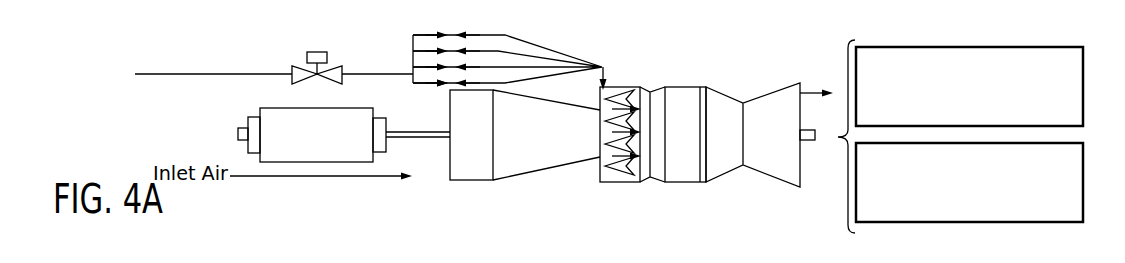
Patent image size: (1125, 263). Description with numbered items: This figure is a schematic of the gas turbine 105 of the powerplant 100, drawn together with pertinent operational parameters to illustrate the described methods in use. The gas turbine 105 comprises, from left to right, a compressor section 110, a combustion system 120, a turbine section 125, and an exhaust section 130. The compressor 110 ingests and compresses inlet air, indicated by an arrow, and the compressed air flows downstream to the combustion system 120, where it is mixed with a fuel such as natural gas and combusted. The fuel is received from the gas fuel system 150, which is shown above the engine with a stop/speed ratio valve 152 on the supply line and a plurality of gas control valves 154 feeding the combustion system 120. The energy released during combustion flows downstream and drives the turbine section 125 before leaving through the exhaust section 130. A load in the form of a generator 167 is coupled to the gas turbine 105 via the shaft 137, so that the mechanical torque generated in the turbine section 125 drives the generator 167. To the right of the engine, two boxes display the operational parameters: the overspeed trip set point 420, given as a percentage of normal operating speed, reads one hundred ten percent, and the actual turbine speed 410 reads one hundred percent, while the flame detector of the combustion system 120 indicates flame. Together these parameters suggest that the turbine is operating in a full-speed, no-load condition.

The powerplant 100 is at (85, 112).
The gas fuel system 150 is at (178, 58).
The stop/speed ratio valve 152 is at (305, 60).
The gas control valves 154 is at (427, 35).
The generator 167 is at (277, 108).
The shaft 137 is at (412, 131).
The compressor section 110 is at (510, 186).
The gas turbine 105 is at (592, 214).
The combustion system 120 is at (645, 194).
The turbine section 125 is at (699, 197).
The exhaust section 130 is at (750, 195).
The overspeed trip set point 420 is at (1009, 46).
The actual turbine speed 410 is at (1004, 223).